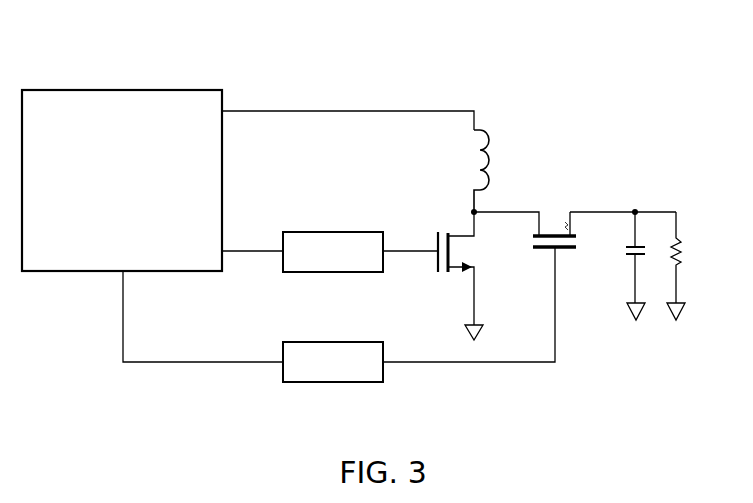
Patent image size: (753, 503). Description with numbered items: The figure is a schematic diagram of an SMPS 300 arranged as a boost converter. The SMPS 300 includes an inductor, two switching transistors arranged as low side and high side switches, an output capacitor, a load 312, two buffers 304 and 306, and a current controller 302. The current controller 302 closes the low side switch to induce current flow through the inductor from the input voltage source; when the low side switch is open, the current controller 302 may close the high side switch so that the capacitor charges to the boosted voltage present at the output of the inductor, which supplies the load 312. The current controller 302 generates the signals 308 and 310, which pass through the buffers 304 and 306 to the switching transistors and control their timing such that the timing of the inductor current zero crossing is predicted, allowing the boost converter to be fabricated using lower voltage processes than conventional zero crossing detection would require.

The SMPS 300 is at (502, 61).
The current controller 302 is at (113, 90).
The buffer 304 is at (334, 232).
The buffer 306 is at (332, 384).
The signal 308 is at (254, 252).
The signal 310 is at (182, 363).
The load 312 is at (684, 254).